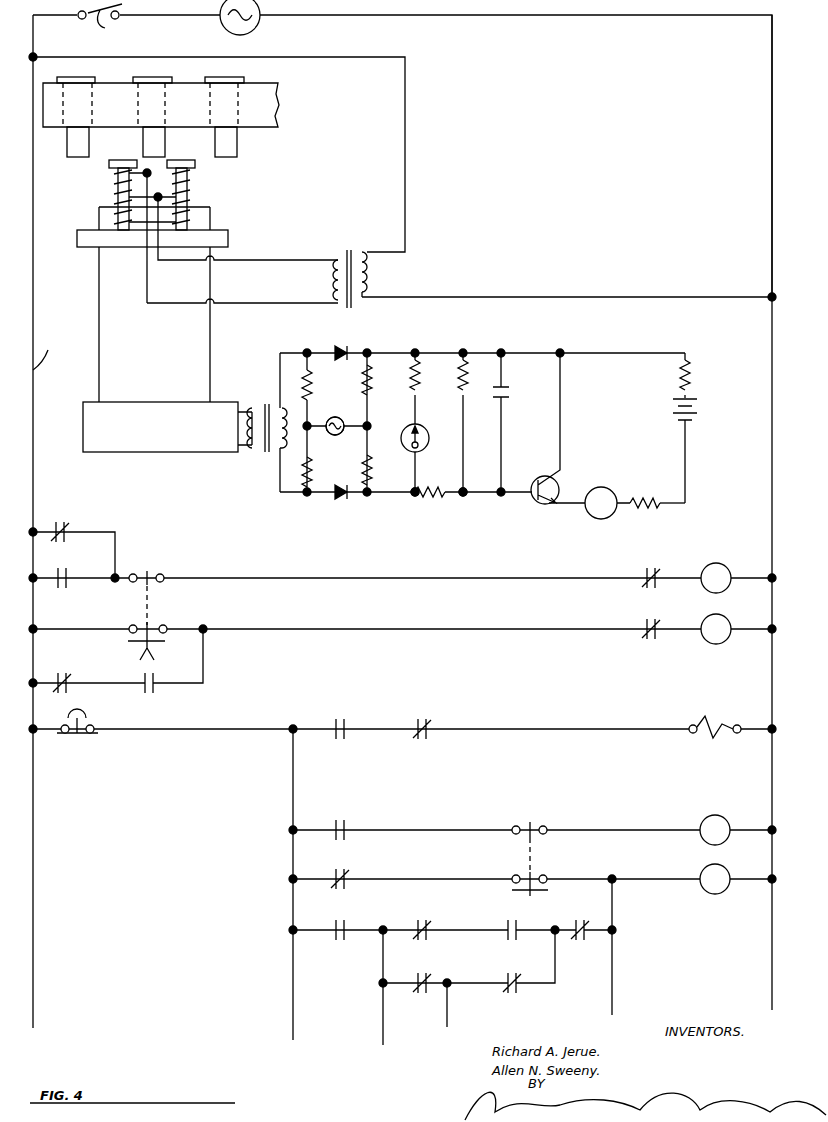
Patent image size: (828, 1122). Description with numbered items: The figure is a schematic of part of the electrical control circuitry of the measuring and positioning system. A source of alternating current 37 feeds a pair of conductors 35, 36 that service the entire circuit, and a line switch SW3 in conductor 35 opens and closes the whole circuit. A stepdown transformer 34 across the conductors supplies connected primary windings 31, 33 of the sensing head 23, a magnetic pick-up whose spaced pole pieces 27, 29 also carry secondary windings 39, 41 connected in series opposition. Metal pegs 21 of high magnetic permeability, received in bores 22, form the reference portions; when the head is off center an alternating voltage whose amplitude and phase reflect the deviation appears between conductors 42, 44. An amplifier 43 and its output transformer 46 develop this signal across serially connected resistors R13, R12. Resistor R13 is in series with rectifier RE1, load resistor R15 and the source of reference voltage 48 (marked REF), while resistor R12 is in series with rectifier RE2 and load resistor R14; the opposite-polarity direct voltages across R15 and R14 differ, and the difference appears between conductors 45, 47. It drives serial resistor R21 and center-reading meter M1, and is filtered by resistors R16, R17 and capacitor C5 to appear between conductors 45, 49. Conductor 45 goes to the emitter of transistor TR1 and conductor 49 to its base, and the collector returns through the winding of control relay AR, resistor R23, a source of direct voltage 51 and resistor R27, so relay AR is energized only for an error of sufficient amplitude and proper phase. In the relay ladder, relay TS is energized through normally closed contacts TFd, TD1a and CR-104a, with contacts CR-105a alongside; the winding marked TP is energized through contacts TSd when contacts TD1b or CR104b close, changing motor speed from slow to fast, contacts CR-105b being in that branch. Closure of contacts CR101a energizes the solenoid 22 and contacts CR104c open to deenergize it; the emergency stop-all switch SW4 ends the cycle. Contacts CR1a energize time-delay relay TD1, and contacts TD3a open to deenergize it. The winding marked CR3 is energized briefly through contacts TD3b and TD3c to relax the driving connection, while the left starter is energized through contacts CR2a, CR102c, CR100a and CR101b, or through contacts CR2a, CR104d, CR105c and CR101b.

The line switch SW3 is at (111, 22).
The source of alternating current 37 is at (262, 25).
The solenoid 22 is at (694, 725).
The pegs 21 is at (258, 142).
The primary winding 31 is at (116, 178).
The pole piece 27 is at (119, 197).
The secondary winding 39 is at (115, 216).
The primary winding 33 is at (192, 178).
The pole piece 29 is at (186, 200).
The secondary winding 41 is at (188, 222).
The sensing head 23 is at (118, 244).
The conductor 42 is at (99, 320).
The conductor 35 is at (45, 352).
The conductor 44 is at (210, 328).
The stepdown transformer 34 is at (336, 285).
The conductor 36 is at (770, 255).
The amplifier 43 is at (214, 438).
The output transformer 46 is at (262, 452).
The conductor 45 is at (395, 347).
The rectifier RE1 is at (348, 326).
The rectifier RE2 is at (340, 500).
The resistor R13 is at (312, 398).
The resistor R12 is at (328, 466).
The load resistor R15 is at (372, 378).
The load resistor R14 is at (384, 464).
The source of reference voltage 48 is at (334, 416).
The reference source REF is at (331, 433).
The resistor R21 is at (420, 378).
The meter M1 is at (424, 428).
The resistor R17 is at (468, 378).
The capacitor C5 is at (509, 392).
The resistor R27 is at (690, 378).
The source of direct voltage 51 is at (700, 412).
The transistor TR1 is at (540, 506).
The control relay AR is at (608, 490).
The resistor R23 is at (648, 508).
The resistor R16 is at (440, 498).
The conductor 47 is at (410, 500).
The conductor 49 is at (488, 496).
The contacts CR-104a is at (80, 510).
The relay contact CR-105a is at (76, 562).
The contacts TD1a is at (146, 570).
The contacts TD1b is at (154, 627).
The relay contact CR-105b is at (80, 664).
The contacts CR104b is at (150, 695).
The contacts TFd is at (641, 566).
The relay TS is at (716, 566).
The relay contact TSd is at (643, 641).
The relay coil TP is at (716, 638).
The emergency stop all switch SW4 is at (80, 738).
The contacts CR101a is at (354, 706).
The contacts CR104c is at (440, 708).
The contacts CR1a is at (352, 804).
The contacts TD3a is at (540, 806).
The time-delay relay TD1 is at (706, 818).
The contacts TD3c is at (354, 856).
The contacts TD3b is at (540, 876).
The relay coil CR3 is at (700, 872).
The contacts CR101b is at (352, 908).
The contacts CR105c is at (438, 904).
The contacts CR104d is at (526, 906).
The contacts CR2a is at (594, 906).
The contacts CR100a is at (438, 960).
The contacts CR102c is at (514, 994).